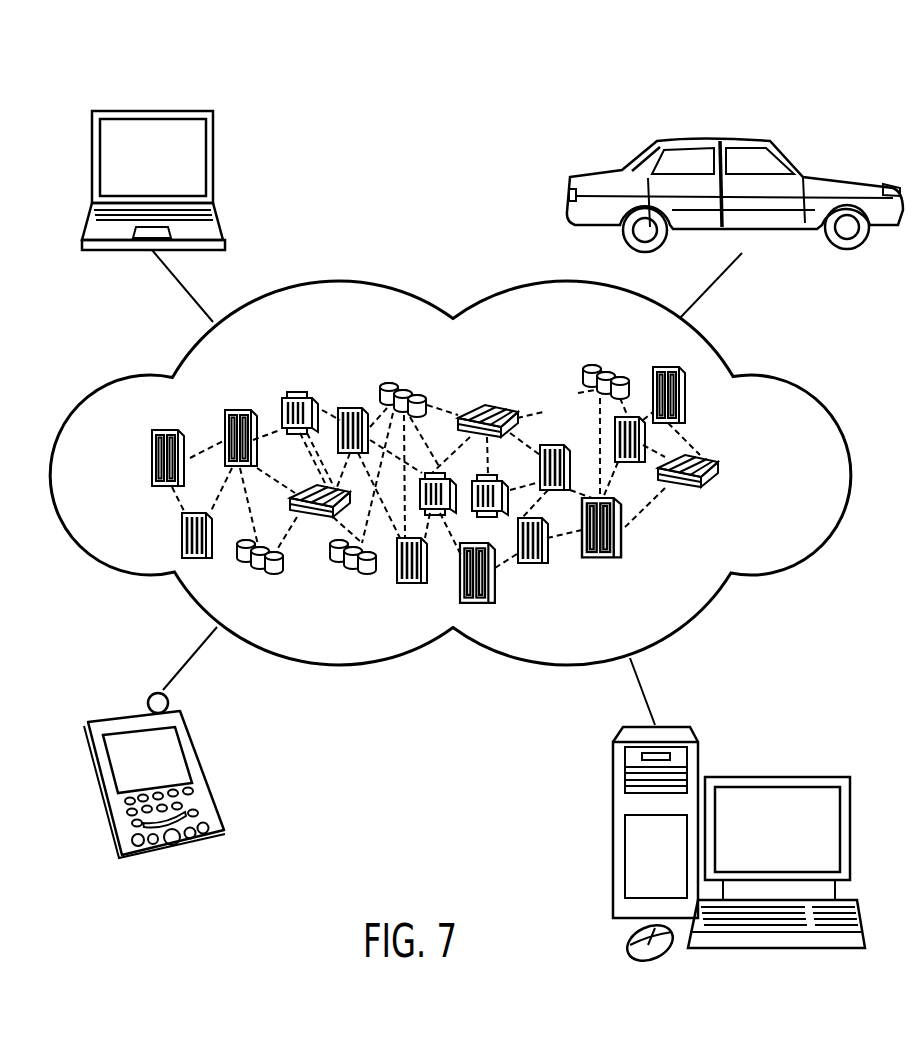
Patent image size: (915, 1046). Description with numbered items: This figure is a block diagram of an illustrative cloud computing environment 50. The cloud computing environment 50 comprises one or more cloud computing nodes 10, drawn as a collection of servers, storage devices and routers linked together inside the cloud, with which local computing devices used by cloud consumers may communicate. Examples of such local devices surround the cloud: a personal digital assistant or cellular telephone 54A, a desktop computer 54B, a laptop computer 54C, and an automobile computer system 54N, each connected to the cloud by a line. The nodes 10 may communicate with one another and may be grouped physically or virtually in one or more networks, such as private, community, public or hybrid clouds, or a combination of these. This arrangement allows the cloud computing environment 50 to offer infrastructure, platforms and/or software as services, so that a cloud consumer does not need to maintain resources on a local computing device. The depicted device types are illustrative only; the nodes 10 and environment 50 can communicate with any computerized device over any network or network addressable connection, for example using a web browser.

The cloud computing node 10 is at (727, 473).
The cloud computing environment 50 is at (793, 380).
The personal digital assistant or cellular telephone 54A is at (132, 713).
The desktop computer 54B is at (780, 775).
The laptop computer 54C is at (152, 111).
The automobile computer system 54N is at (714, 136).